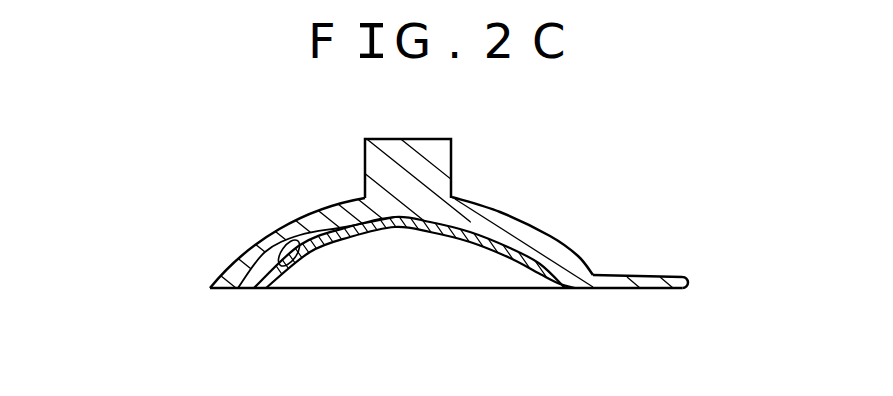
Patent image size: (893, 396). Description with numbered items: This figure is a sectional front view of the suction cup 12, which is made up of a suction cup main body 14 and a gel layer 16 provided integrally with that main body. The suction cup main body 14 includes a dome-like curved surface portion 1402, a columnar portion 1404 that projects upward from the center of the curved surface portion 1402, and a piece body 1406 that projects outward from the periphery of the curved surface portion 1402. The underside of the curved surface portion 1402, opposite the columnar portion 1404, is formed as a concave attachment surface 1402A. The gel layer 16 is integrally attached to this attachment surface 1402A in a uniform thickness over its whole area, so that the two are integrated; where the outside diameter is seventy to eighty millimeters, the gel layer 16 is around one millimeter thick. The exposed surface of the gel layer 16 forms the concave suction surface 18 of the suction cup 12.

The suction cup 12 is at (462, 144).
The suction cup main body 14 is at (505, 212).
The gel layer 16 is at (321, 248).
The suction surface 18 is at (463, 236).
The curved surface portion 1402 is at (295, 220).
The attachment surface 1402A is at (238, 256).
The columnar portion 1404 is at (365, 153).
The piece body 1406 is at (638, 276).